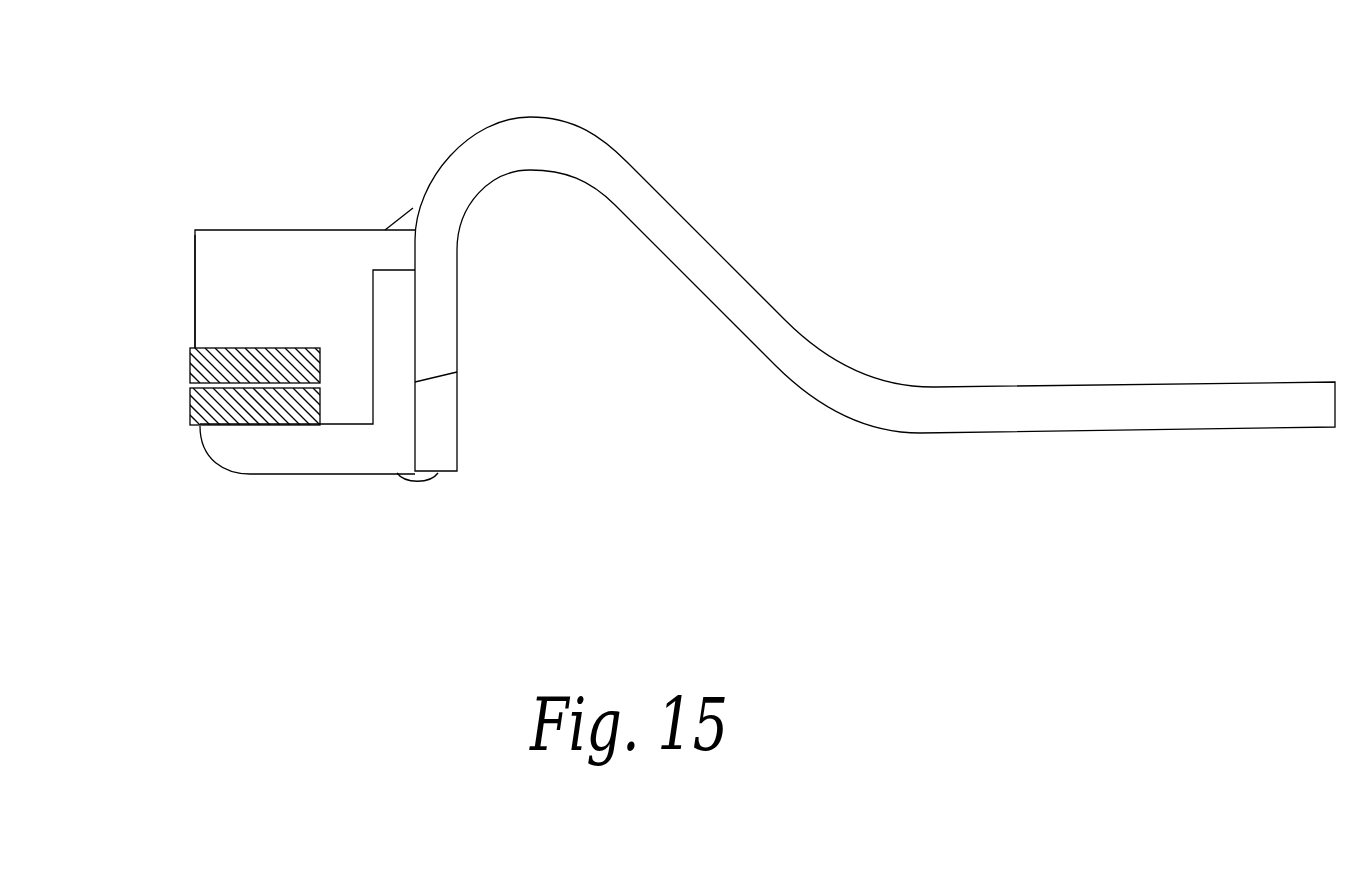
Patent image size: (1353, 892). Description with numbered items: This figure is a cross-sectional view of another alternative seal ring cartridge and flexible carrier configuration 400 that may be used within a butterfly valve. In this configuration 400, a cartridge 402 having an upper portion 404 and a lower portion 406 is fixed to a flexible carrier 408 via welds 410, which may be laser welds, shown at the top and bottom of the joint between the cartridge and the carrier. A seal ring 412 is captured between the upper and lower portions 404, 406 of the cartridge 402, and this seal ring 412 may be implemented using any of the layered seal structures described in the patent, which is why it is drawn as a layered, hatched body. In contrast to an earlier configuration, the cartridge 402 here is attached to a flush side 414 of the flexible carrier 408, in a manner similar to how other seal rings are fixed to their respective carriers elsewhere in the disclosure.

The seal ring cartridge and flexible carrier configuration 400 is at (1001, 222).
The cartridge 402 is at (243, 230).
The upper portion 404 is at (196, 268).
The lower portion 406 is at (215, 453).
The flexible carrier 408 is at (935, 390).
The welds 410 is at (403, 226).
The seal ring 412 is at (190, 360).
The flush side 414 is at (415, 382).